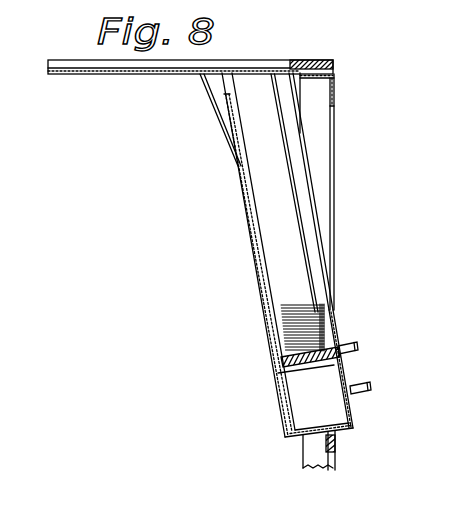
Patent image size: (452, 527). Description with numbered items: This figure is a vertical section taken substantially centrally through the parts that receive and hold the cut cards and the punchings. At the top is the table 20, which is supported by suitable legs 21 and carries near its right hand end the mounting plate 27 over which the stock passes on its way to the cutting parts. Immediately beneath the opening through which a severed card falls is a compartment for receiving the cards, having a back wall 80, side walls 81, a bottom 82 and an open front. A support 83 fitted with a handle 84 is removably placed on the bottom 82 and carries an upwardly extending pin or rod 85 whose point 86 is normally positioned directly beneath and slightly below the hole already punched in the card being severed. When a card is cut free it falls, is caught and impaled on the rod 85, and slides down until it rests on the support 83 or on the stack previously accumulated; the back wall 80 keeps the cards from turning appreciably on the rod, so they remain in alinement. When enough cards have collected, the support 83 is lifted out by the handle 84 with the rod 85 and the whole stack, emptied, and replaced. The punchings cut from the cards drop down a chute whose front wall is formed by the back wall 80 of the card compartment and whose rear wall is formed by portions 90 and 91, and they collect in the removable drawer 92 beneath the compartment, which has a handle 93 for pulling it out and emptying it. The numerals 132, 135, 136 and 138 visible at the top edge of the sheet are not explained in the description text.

The table 20 is at (67, 75).
The legs 21 is at (335, 461).
The mounting plate 27 is at (334, 62).
The back wall 80 is at (257, 209).
The side walls 81 is at (308, 163).
The bottom 82 is at (302, 367).
The support 83 is at (338, 345).
The handle 84 is at (359, 348).
The pin or rod 85 is at (307, 237).
The point 86 is at (272, 78).
The portion of chute rear wall 90 is at (218, 95).
The portion of chute rear wall 91 is at (253, 257).
The removable drawer 92 is at (355, 413).
The handle 93 is at (372, 387).
The element of adjacent figure 132 is at (242, 0).
The element of adjacent figure 135 is at (435, 0).
The element of adjacent figure 136 is at (367, 19).
The element of adjacent figure 138 is at (332, 0).